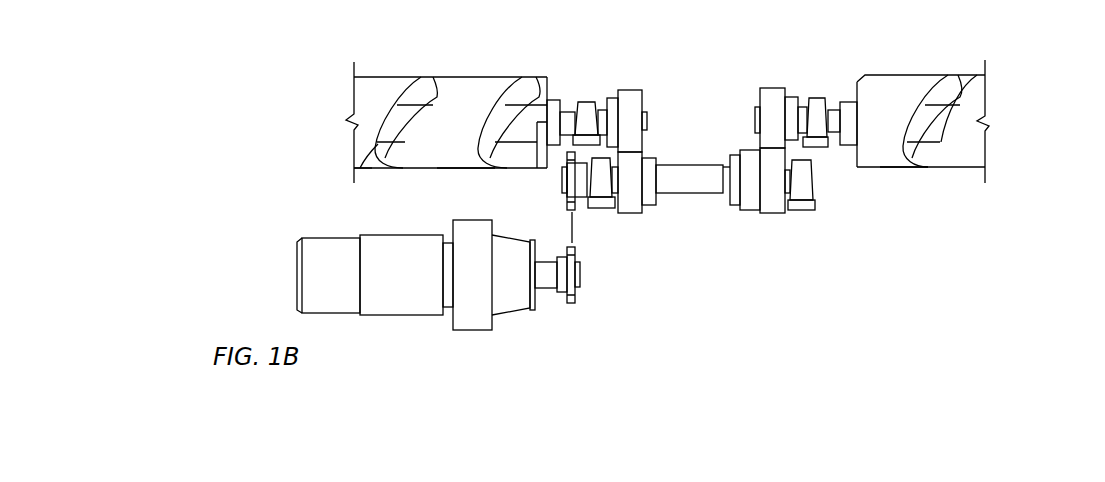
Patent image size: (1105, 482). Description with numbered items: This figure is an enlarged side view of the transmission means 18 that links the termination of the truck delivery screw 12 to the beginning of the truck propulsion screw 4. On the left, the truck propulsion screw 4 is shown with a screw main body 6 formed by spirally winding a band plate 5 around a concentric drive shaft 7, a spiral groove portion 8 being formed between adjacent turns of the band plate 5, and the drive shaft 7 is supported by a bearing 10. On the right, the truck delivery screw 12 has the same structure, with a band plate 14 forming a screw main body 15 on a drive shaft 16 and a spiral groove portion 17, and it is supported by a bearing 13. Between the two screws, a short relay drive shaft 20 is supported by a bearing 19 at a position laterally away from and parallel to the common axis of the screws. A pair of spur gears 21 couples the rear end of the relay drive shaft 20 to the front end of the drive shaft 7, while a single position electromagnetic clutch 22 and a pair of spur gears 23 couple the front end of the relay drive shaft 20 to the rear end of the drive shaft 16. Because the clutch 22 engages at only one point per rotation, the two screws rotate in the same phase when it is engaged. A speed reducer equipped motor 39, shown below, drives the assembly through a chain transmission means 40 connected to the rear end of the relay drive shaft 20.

The truck propulsion screw 4 is at (373, 70).
The band plate 5 is at (449, 163).
The screw main body 6 is at (462, 78).
The drive shaft 7 is at (412, 117).
The spiral groove portion 8 is at (377, 170).
The bearing 10 is at (579, 104).
The truck delivery screw 12 is at (967, 170).
The bearing 13 is at (816, 106).
The band plate 14 is at (893, 92).
The screw main body 15 is at (931, 73).
The drive shaft 16 is at (1026, 157).
The spiral groove portion 17 is at (906, 171).
The transmission means 18 is at (716, 135).
The bearing 19 is at (601, 190).
The relay drive shaft 20 is at (697, 187).
The spur gears 21 is at (634, 183).
The single position electromagnetic clutch 22 is at (752, 190).
The spur gears 23 is at (763, 105).
The speed reducer equipped motor 39 is at (326, 250).
The chain transmission means 40 is at (566, 228).